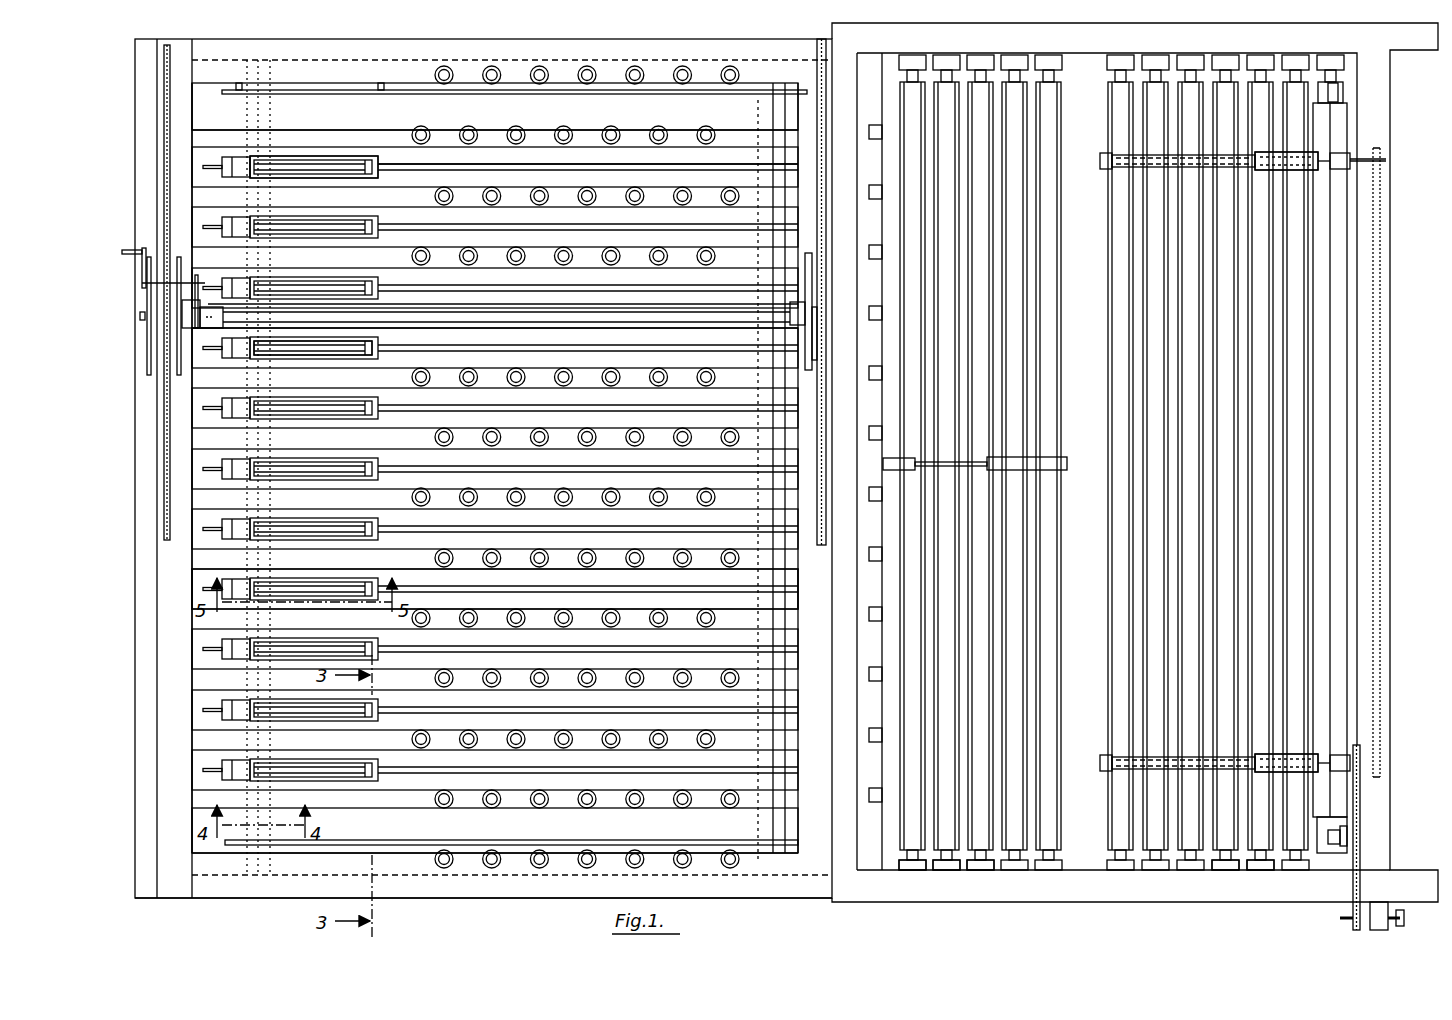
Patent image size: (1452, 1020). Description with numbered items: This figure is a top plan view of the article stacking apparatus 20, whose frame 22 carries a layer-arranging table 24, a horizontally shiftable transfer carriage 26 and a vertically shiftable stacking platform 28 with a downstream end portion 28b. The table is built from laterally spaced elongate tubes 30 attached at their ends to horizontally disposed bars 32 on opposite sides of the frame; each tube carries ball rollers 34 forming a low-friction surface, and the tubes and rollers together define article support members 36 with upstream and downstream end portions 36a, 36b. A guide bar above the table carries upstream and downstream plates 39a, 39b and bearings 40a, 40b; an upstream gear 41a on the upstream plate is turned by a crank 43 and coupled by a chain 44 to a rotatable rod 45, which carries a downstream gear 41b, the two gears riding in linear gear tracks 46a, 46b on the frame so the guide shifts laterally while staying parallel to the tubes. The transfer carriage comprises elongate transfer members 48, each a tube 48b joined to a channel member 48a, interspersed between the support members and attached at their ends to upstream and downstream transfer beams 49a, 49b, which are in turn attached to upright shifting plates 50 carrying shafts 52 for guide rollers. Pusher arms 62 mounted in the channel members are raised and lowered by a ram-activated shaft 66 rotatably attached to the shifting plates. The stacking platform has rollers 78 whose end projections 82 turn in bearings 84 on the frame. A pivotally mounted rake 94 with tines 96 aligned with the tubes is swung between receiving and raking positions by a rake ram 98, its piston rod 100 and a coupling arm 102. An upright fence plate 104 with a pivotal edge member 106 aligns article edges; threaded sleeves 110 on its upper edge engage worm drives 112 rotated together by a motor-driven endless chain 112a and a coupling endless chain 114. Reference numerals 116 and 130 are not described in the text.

The article stacking apparatus 20 is at (805, 900).
The frame 22 is at (790, 50).
The layer-arranging table 24 is at (182, 740).
The horizontally shiftable transfer carriage 26 is at (797, 628).
The vertically shiftable stacking platform 28 is at (1012, 822).
The downstream end portion of stacking platform 28b is at (1342, 314).
The elongate tubes 30 is at (450, 492).
The horizontally disposed bars 32 is at (185, 778).
The ball rollers 34 is at (665, 495).
The article support members 36 is at (445, 372).
The upstream end portion of article support member 36a is at (222, 322).
The downstream end portion of article support member 36b is at (758, 437).
The upstream plate 39a is at (150, 283).
The downstream plate 39b is at (810, 262).
The upstream bearing 40a is at (192, 380).
The downstream bearing 40b is at (803, 302).
The upstream gear 41a is at (170, 297).
The downstream gear 41b is at (818, 328).
The crank 43 is at (122, 252).
The chain 44 is at (205, 300).
The rotatable rod 45 is at (233, 313).
The upstream linear gear track 46a is at (160, 158).
The downstream linear gear track 46b is at (822, 192).
The elongate transfer members 48 is at (443, 163).
The elongate channel member 48a is at (352, 170).
The tube of transfer member 48b is at (688, 280).
The upstream transfer beam 49a is at (242, 665).
The downstream transfer beam 49b is at (798, 560).
The shifting plates 50 is at (805, 92).
The shafts 52 is at (360, 845).
The pusher arms 62 is at (312, 348).
The ram-activated shaft 66 is at (195, 522).
The rollers 78 is at (1222, 580).
The end projections 82 is at (985, 872).
The bearings 84 is at (1262, 878).
The rake 94 is at (905, 76).
The tines 96 is at (872, 792).
The rake ram 98 is at (1045, 456).
The piston rod 100 is at (990, 468).
The coupling arm 102 is at (884, 464).
The fence plate 104 is at (1332, 392).
The edge member 106 is at (1348, 835).
The sleeves 110 is at (1292, 160).
The worm drives 112 is at (1104, 162).
The motor-driven endless chain 112a is at (1360, 862).
The coupling endless chain 114 is at (1395, 515).
The bracket 116 is at (1347, 822).
The stop 130 is at (1348, 840).